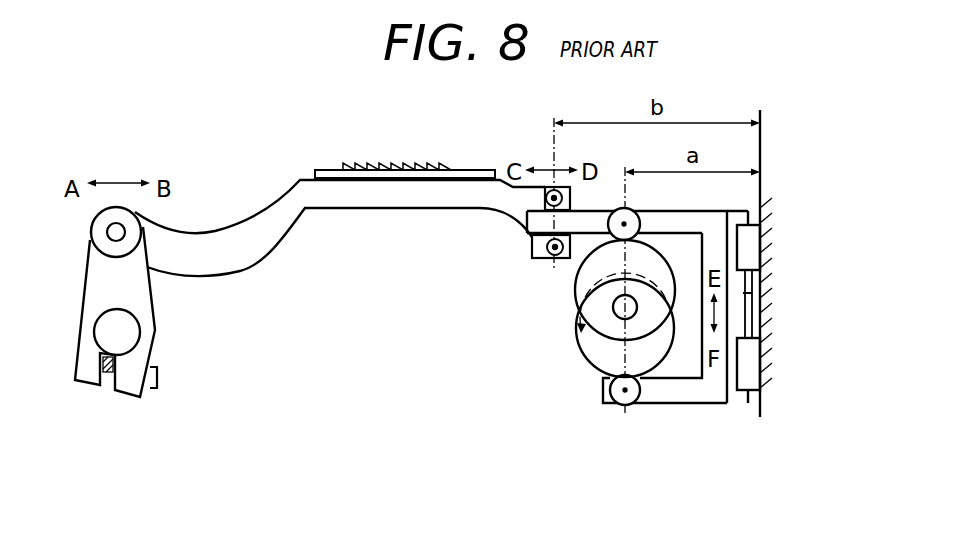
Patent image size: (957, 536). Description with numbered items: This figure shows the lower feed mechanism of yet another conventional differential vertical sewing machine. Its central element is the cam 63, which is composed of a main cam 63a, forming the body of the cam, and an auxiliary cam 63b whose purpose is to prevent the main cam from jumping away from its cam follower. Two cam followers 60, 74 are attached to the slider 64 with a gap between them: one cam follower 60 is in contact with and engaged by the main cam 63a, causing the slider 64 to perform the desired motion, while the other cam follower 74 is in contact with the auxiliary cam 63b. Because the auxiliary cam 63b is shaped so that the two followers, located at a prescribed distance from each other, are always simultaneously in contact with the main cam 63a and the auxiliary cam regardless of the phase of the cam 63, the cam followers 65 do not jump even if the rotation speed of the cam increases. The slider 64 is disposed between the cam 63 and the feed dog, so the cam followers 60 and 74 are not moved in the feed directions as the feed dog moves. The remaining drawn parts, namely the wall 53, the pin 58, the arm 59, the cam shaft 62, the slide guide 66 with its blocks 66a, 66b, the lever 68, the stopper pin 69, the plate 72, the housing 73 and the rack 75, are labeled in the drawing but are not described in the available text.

The wall / fixed frame 53 is at (770, 387).
The pin 58 is at (100, 354).
The arm 59 is at (240, 270).
The cam follower 60 is at (640, 216).
The cam shaft 62 is at (618, 318).
The cam 63 is at (562, 321).
The main cam 63a is at (588, 290).
The auxiliary cam 63b is at (587, 355).
The slider 64 is at (723, 212).
The cam followers 65 is at (543, 243).
The slide guide 66 is at (815, 299).
The lower slide block 66a is at (752, 292).
The upper slide block 66b is at (757, 242).
The lever 68 is at (155, 332).
The stopper pin 69 is at (157, 388).
The plate 72 is at (598, 210).
The housing 73 is at (673, 403).
The cam follower 74 is at (613, 405).
The rack 75 is at (467, 170).